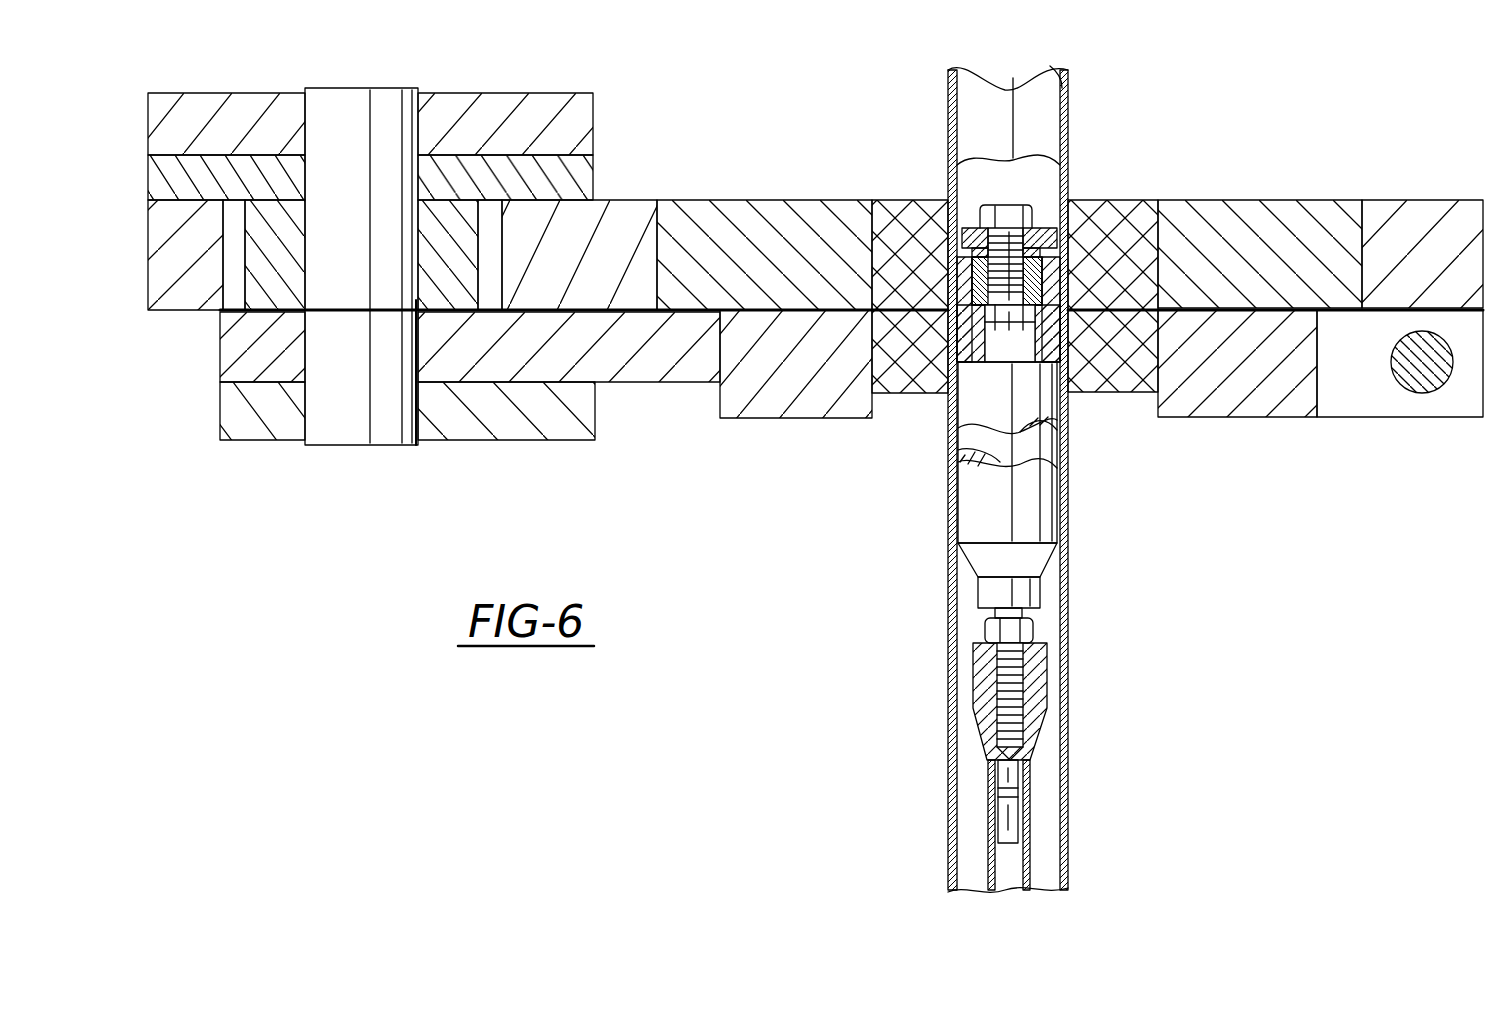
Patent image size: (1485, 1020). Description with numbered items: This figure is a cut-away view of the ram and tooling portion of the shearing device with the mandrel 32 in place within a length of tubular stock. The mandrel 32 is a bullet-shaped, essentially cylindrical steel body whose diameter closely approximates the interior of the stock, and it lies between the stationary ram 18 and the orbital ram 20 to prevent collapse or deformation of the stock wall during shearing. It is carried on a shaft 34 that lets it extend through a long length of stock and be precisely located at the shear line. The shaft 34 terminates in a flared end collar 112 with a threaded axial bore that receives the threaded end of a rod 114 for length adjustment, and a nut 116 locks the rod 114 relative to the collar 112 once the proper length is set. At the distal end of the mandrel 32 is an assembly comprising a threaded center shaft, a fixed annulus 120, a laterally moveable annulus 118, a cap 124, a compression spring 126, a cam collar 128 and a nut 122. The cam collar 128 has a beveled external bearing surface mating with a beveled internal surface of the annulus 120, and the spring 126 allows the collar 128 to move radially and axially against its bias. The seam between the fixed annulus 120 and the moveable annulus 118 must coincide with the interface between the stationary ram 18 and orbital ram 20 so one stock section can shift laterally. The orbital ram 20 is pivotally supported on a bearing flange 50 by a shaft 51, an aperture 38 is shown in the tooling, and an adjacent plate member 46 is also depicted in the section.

The stationary ram 18 is at (1270, 418).
The orbital ram 20 is at (1313, 199).
The mandrel 32 is at (968, 505).
The shaft 34 is at (1028, 838).
The aperture 38 is at (873, 395).
The upper mounting plate 46 is at (882, 199).
The bearing flange 50 is at (593, 127).
The shaft 51 is at (381, 432).
The flared end collar 112 is at (975, 692).
The threaded rod 114 is at (1022, 687).
The nut 116 is at (1033, 633).
The laterally moveable annulus 118 is at (963, 270).
The fixed annulus 120 is at (1057, 335).
The nut 122 is at (1011, 202).
The cap 124 is at (1040, 230).
The compression spring 126 is at (947, 313).
The cam collar 128 is at (1050, 297).